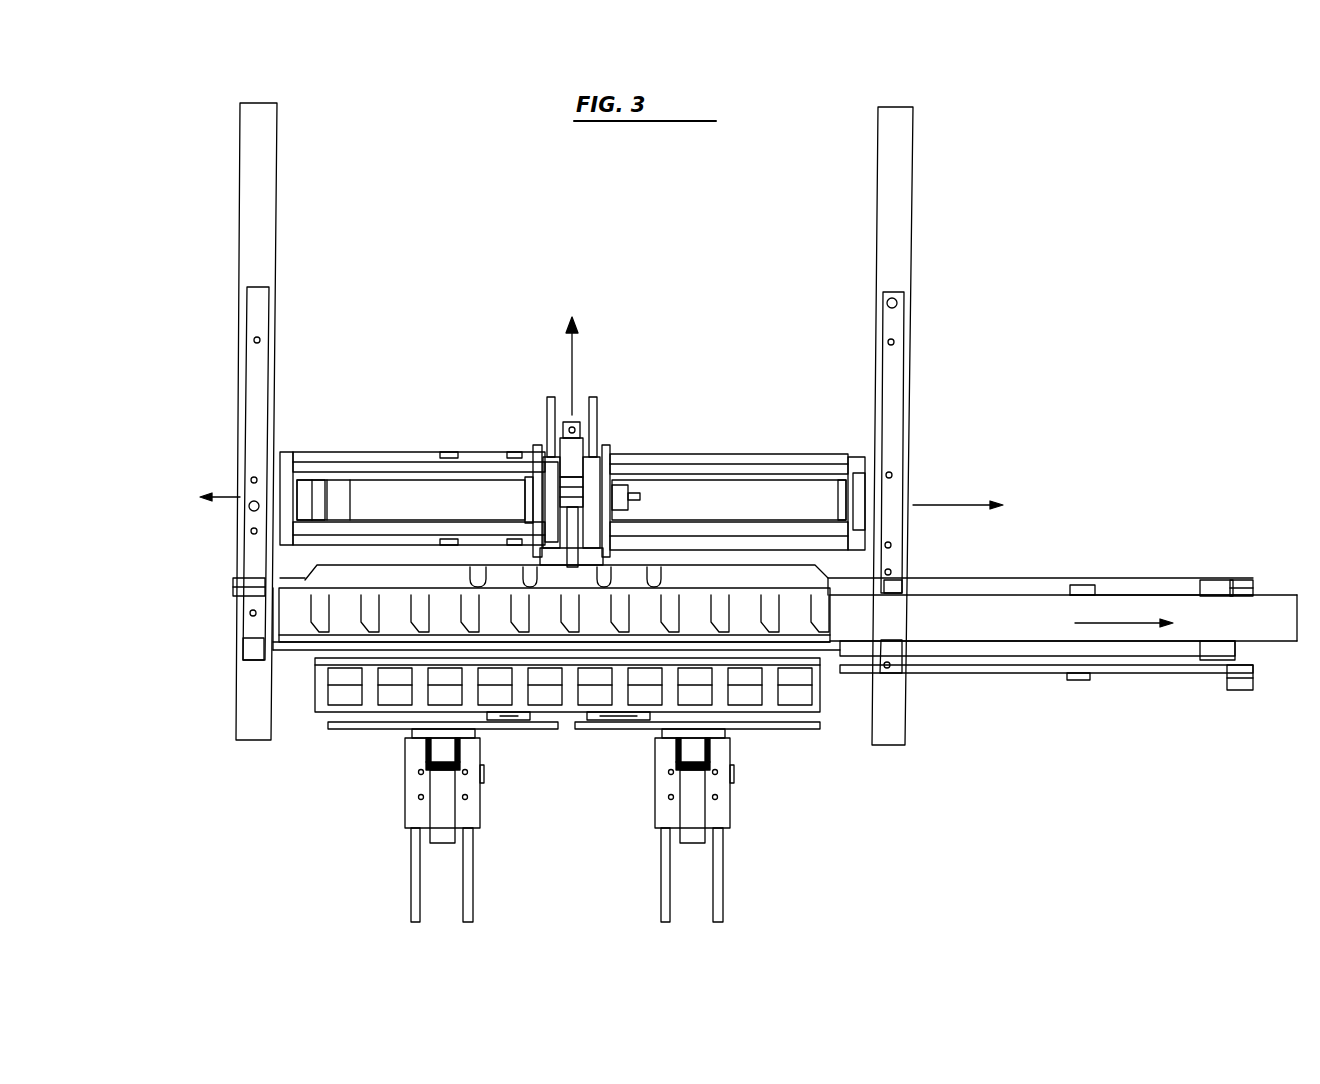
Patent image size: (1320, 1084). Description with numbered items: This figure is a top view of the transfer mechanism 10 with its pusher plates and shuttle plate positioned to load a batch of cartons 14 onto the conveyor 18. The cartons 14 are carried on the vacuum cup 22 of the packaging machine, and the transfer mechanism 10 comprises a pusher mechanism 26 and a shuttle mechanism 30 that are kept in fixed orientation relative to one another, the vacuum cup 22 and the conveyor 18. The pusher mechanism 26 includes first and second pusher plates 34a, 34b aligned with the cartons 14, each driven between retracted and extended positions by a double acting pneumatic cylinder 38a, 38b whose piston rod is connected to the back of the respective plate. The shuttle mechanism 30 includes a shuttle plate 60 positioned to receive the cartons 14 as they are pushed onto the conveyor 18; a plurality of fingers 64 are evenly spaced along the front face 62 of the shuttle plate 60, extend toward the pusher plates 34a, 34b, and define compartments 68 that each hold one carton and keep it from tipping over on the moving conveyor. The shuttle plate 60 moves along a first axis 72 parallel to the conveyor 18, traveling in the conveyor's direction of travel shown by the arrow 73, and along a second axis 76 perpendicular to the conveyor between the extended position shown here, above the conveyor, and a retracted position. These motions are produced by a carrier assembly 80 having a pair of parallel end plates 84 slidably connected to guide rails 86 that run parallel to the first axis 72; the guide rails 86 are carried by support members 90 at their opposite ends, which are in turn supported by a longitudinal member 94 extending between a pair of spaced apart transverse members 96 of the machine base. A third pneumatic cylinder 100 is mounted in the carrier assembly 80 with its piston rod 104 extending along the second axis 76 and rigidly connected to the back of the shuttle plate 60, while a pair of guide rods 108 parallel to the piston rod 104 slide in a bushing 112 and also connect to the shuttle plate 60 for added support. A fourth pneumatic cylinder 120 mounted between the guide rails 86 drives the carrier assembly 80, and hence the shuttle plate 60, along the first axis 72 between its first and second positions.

The transfer mechanism 10 is at (1088, 383).
The cartons 14 is at (333, 695).
The conveyor 18 is at (1245, 614).
The vacuum cup 22 is at (368, 700).
The pusher mechanism 26 is at (304, 870).
The shuttle mechanism 30 is at (704, 216).
The first pusher plate 34a is at (520, 733).
The second pusher plate 34b is at (770, 733).
The pneumatic cylinder 38a is at (445, 830).
The pneumatic cylinder 38b is at (695, 830).
The shuttle plate 60 is at (822, 578).
The front face 62 is at (800, 595).
The fingers 64 is at (822, 615).
The compartments 68 is at (787, 607).
The first axis 72 is at (955, 505).
The arrow 73 is at (1108, 624).
The second axis 76 is at (575, 363).
The carrier assembly 80 is at (493, 312).
The end plates 84 is at (540, 452).
The guide rails 86 is at (705, 543).
The support members 90 is at (280, 452).
The longitudinal member 94 is at (277, 470).
The transverse members 96 is at (257, 205).
The third pneumatic cylinder 100 is at (578, 445).
The piston rod 104 is at (598, 562).
The guide rods 108 is at (548, 473).
The bushing 112 is at (535, 560).
The fourth pneumatic cylinder 120 is at (375, 497).